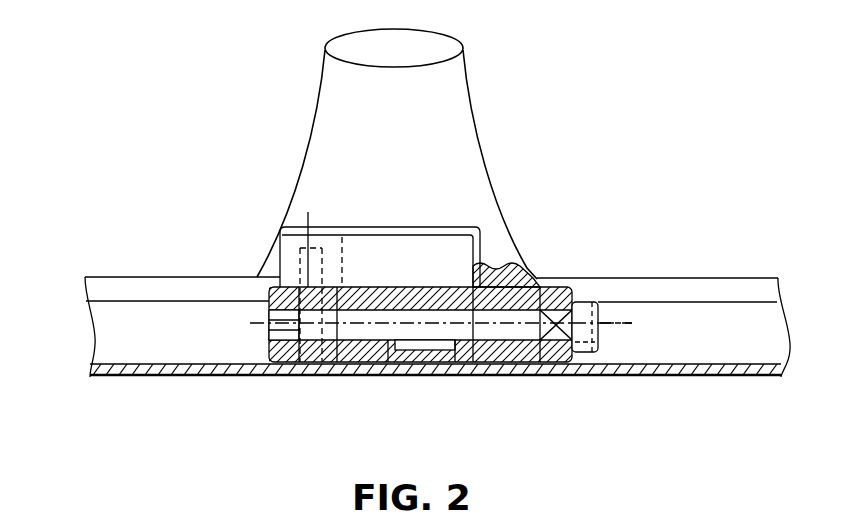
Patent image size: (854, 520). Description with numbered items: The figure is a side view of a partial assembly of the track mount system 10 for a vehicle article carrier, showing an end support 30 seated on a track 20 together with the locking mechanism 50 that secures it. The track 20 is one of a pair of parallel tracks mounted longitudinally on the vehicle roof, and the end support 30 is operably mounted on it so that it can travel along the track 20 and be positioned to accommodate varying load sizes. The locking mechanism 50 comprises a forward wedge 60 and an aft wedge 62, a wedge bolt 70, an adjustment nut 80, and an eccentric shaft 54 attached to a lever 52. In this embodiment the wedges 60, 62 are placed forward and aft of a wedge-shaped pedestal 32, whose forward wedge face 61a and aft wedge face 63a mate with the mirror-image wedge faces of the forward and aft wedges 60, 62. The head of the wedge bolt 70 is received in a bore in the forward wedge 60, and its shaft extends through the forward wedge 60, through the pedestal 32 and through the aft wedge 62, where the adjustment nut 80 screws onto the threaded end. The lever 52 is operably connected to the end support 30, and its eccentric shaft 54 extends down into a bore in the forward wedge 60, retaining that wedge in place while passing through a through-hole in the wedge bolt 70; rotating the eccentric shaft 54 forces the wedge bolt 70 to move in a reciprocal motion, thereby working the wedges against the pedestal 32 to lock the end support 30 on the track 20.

The track mount system 10 is at (257, 100).
The track 20 is at (155, 380).
The end support 30 is at (478, 116).
The pedestal 32 is at (435, 363).
The locking mechanism 50 is at (347, 353).
The lever 52 is at (443, 256).
The eccentric shaft 54 is at (257, 277).
The forward wedge 60 is at (292, 347).
The forward wedge face 61a is at (392, 363).
The aft wedge 62 is at (547, 350).
The aft wedge face 63a is at (472, 363).
The wedge bolt 70 is at (628, 320).
The adjustment nut 80 is at (612, 333).